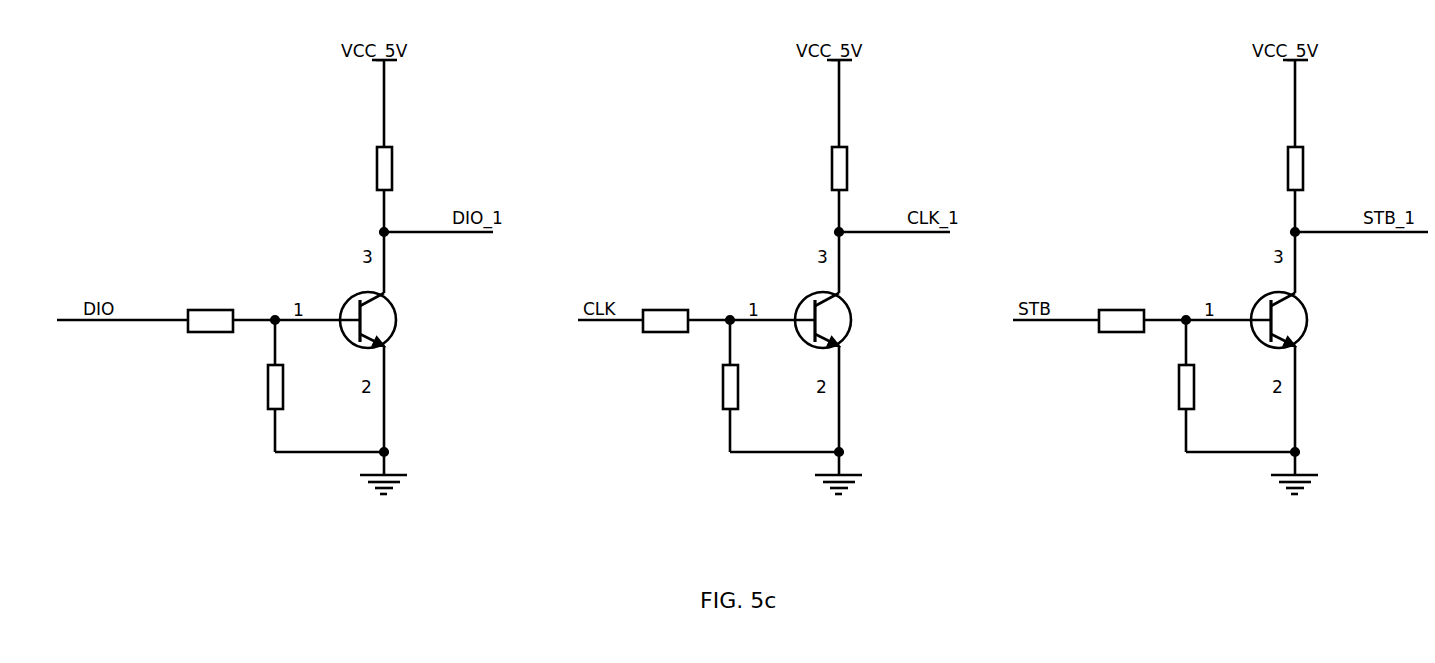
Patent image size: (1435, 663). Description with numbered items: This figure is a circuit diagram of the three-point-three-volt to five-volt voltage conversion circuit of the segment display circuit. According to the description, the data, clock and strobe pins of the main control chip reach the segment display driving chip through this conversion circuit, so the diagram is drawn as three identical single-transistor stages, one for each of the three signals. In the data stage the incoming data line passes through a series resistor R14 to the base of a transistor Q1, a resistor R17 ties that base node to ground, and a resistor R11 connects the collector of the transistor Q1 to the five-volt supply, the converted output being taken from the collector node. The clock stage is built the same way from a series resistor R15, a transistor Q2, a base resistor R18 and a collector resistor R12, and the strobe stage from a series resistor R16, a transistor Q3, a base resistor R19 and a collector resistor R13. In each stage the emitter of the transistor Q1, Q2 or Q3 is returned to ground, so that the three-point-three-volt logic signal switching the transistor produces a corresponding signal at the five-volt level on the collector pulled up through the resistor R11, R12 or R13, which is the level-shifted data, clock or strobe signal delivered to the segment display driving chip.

The pull-up resistor (DIO_1 collector load) R11 is at (365, 168).
The pull-up resistor (CLK_1 collector load) R12 is at (820, 168).
The pull-up resistor (STB_1 collector load) R13 is at (1276, 168).
The base series resistor (DIO input) R14 is at (210, 309).
The base series resistor (CLK input) R15 is at (665, 309).
The base series resistor (STB input) R16 is at (1121, 309).
The base pull-down resistor R17 is at (299, 387).
The base pull-down resistor R18 is at (754, 387).
The base pull-down resistor R19 is at (1210, 387).
The NPN transistor S9013 SOT23-3 (DIO level shifter) Q1 is at (410, 329).
The NPN transistor S9013 SOT23-3 (CLK level shifter) Q2 is at (865, 329).
The NPN transistor S9013 SOT23-3 (STB level shifter) Q3 is at (1321, 329).